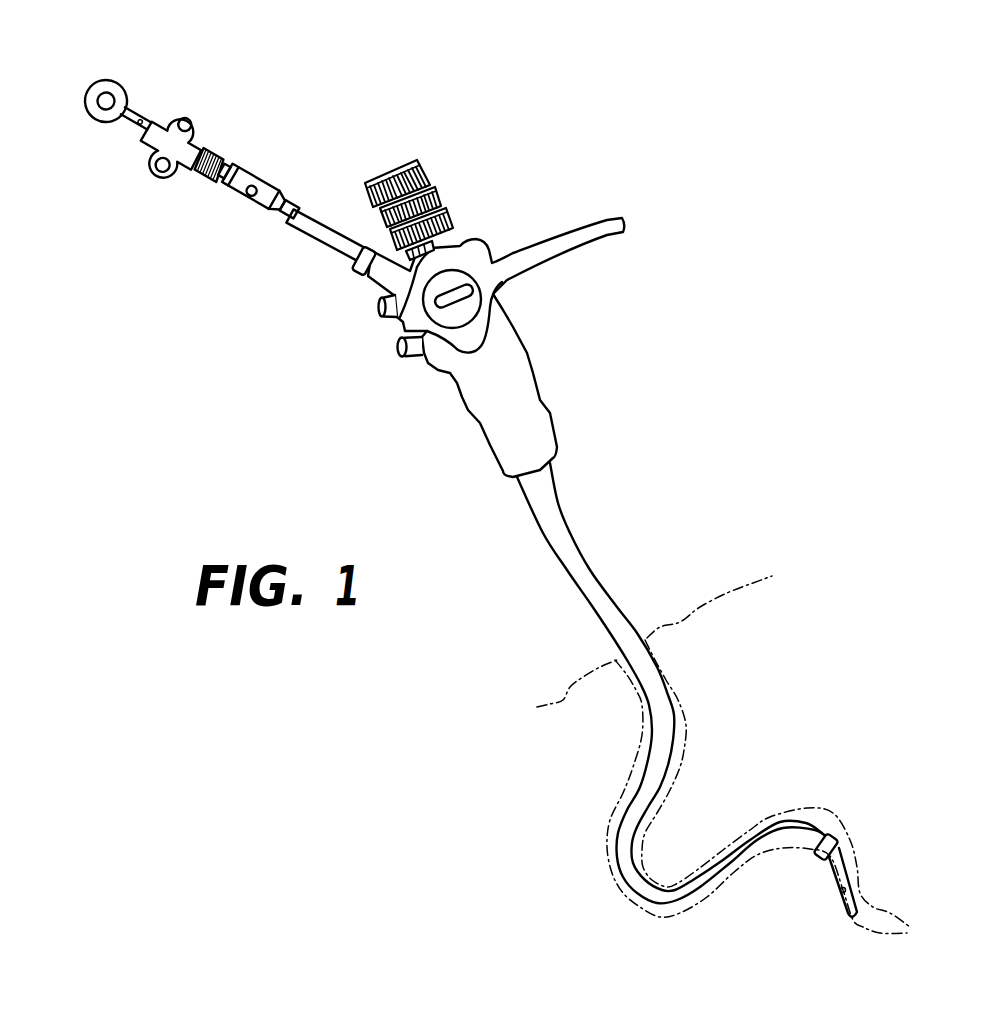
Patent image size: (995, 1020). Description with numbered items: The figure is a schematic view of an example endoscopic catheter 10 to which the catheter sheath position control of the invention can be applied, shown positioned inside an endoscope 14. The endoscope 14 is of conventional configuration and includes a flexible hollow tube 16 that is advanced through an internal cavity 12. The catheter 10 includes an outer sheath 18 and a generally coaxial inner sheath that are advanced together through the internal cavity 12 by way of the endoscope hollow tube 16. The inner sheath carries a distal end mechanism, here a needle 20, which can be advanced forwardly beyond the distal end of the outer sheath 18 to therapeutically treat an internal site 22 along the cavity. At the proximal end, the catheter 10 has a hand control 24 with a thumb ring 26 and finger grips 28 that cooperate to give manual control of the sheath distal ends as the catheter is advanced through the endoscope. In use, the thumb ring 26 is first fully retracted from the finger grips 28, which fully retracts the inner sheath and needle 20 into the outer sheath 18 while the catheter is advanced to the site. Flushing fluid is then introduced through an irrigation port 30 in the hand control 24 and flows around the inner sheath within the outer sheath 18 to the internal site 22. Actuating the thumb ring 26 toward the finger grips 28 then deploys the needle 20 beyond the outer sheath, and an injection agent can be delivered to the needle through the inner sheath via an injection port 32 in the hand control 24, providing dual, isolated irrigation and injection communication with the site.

The endoscopic catheter 10 is at (295, 216).
The internal cavity 12 is at (616, 652).
The endoscope 14 is at (522, 357).
The flexible hollow tube 16 is at (662, 707).
The outer sheath 18 is at (836, 865).
The needle 20 is at (849, 899).
The internal site 22 is at (849, 922).
The hand control 24 is at (146, 74).
The thumb ring 26 is at (88, 113).
The finger grips 28 is at (162, 174).
The irrigation port 30 is at (247, 198).
The injection port 32 is at (137, 125).